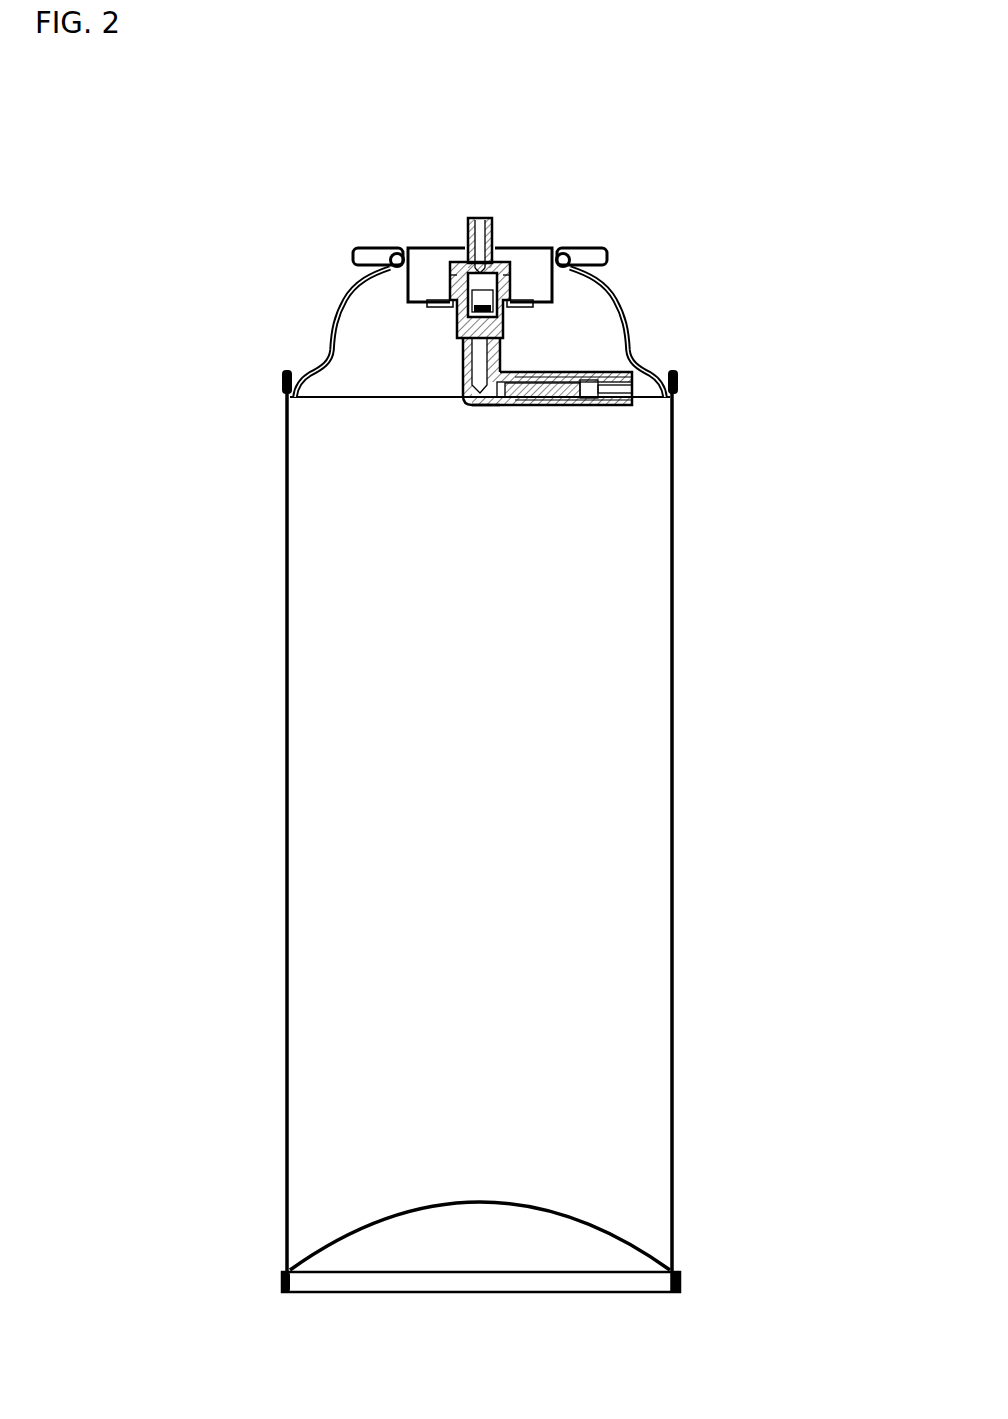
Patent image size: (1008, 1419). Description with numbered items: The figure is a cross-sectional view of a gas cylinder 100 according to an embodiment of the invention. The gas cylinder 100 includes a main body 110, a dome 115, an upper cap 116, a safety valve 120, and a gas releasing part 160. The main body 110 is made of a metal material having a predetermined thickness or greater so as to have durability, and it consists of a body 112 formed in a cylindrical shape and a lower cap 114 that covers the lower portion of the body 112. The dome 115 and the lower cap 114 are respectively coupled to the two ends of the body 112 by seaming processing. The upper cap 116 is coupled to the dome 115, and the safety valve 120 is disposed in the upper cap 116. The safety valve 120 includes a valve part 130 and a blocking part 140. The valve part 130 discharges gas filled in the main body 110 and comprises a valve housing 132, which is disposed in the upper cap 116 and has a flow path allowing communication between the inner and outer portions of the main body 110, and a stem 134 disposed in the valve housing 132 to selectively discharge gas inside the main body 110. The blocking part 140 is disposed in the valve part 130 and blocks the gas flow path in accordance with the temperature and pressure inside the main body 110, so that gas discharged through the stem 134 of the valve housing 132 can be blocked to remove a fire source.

The gas cylinder 100 is at (465, 684).
The main body 110 is at (581, 841).
The body 112 is at (673, 1022).
The lower cap 114 is at (540, 1230).
The dome 115 is at (628, 312).
The upper cap 116 is at (590, 240).
The safety valve 120 is at (337, 342).
The valve part 130 is at (314, 311).
The valve housing 132 is at (463, 363).
The stem 134 is at (450, 276).
The blocking part 140 is at (530, 406).
The gas releasing part 160 is at (685, 373).